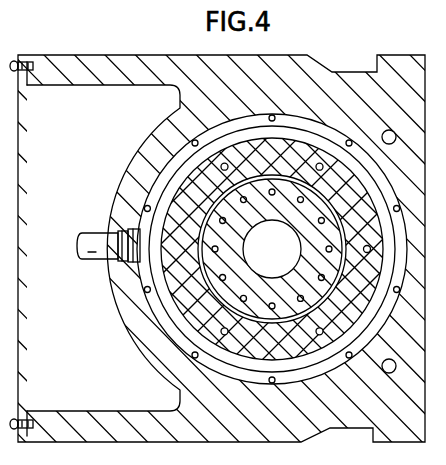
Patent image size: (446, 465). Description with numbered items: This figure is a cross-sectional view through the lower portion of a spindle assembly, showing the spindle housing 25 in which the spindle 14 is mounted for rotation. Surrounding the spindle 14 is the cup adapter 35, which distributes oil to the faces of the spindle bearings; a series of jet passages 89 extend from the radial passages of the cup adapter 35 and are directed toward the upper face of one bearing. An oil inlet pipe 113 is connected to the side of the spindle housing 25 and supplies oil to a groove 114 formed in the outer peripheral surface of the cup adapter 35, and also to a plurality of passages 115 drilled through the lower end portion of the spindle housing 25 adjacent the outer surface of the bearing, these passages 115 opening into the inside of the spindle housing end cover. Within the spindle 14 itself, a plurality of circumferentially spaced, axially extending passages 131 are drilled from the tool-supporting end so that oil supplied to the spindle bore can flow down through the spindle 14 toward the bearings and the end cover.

The spindle housing 25 is at (116, 56).
The cup adapter 35 is at (175, 289).
The groove 114 is at (144, 151).
The passages 115 is at (199, 140).
The jet passages 89 is at (316, 333).
The axially extending passages 131 is at (299, 197).
The spindle 14 is at (250, 222).
The oil inlet pipe 113 is at (96, 232).